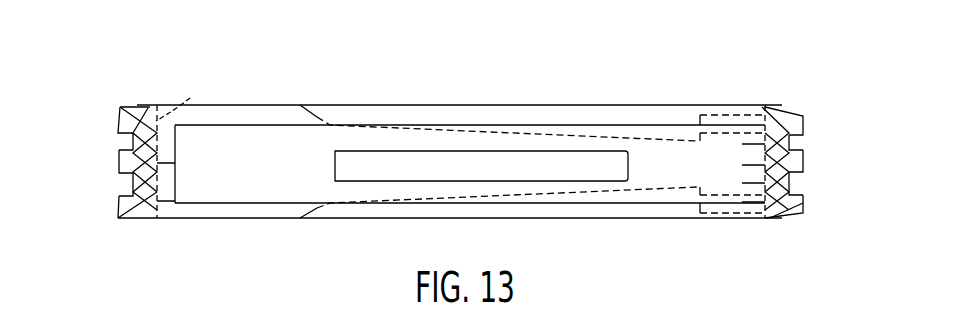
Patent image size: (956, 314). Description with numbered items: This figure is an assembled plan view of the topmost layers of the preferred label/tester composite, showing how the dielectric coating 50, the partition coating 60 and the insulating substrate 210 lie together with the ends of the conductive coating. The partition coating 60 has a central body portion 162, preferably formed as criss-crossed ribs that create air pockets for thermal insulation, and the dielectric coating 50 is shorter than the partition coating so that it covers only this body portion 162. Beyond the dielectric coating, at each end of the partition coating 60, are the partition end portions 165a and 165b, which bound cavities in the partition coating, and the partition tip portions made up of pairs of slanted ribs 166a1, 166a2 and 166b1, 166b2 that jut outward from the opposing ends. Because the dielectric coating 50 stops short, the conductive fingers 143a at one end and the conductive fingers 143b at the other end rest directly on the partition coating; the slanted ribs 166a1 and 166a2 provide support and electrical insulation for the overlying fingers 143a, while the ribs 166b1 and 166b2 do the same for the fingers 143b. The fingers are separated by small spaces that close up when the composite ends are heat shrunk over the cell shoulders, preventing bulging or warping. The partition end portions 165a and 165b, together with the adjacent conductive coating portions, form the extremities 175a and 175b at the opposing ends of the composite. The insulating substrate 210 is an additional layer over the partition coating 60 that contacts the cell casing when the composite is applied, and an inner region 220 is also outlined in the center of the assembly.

The dielectric coating 50 is at (188, 100).
The partition coating 60 is at (572, 105).
The body portion 162 is at (452, 105).
The insulating substrate 210 is at (236, 207).
The inner cavity 220 is at (610, 182).
The slanted rib 166a1 is at (116, 110).
The partition end portion 165a is at (130, 138).
The conductive fingers 143a is at (119, 161).
The extremity 175a is at (131, 185).
The slanted rib 166a2 is at (118, 221).
The slanted rib 166b1 is at (800, 110).
The partition end portion 165b is at (797, 136).
The conductive fingers 143b is at (803, 160).
The extremity 175b is at (797, 183).
The slanted rib 166b2 is at (803, 216).